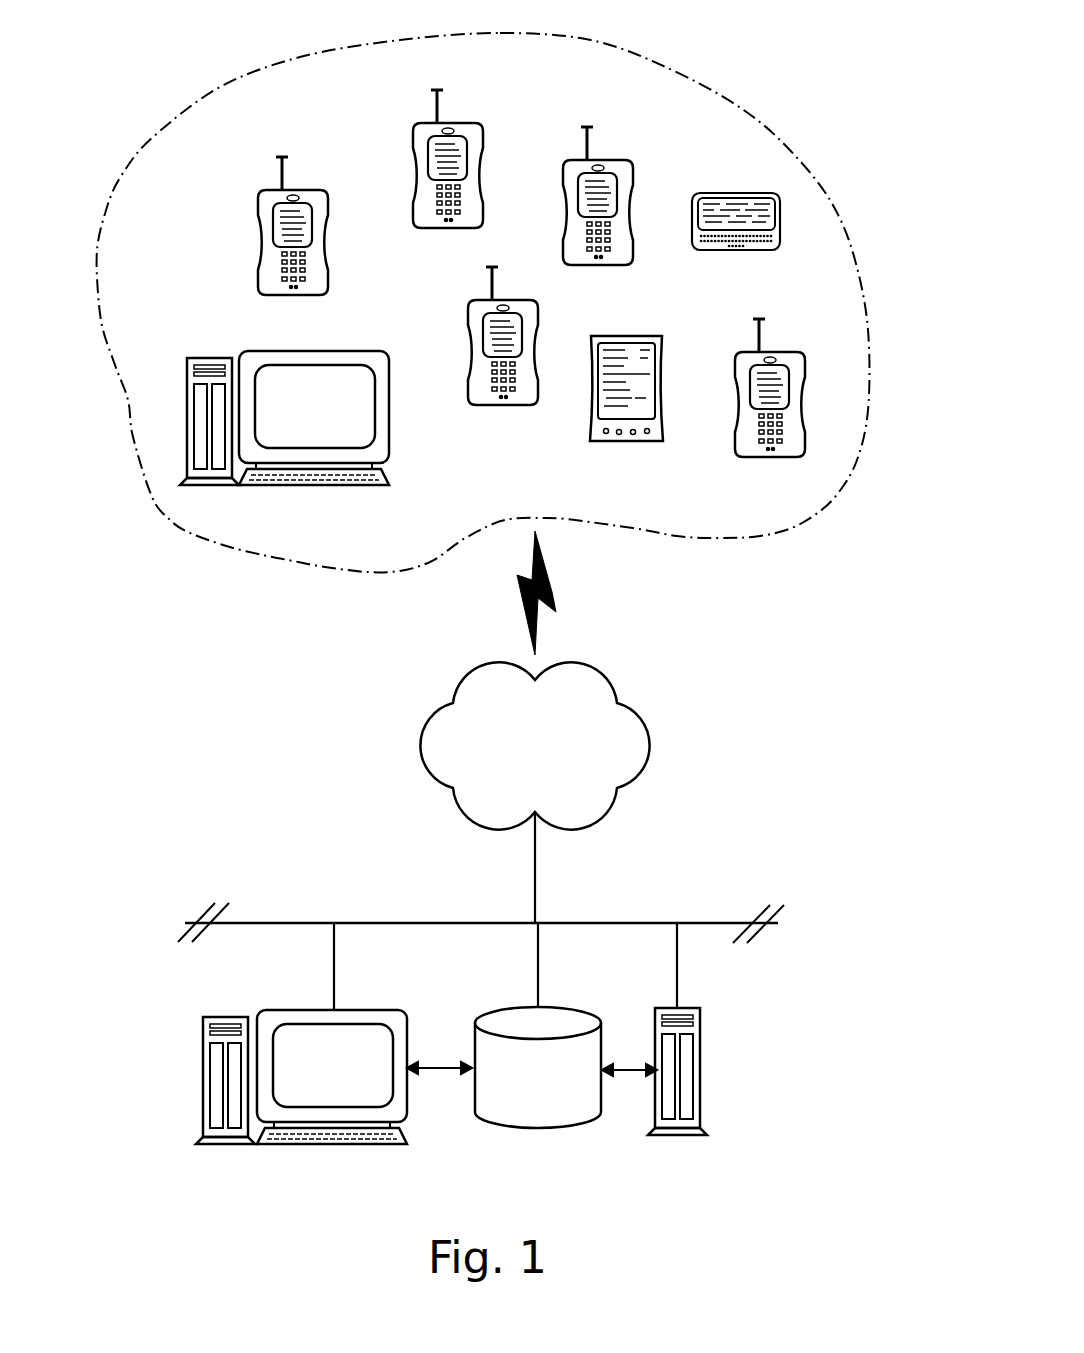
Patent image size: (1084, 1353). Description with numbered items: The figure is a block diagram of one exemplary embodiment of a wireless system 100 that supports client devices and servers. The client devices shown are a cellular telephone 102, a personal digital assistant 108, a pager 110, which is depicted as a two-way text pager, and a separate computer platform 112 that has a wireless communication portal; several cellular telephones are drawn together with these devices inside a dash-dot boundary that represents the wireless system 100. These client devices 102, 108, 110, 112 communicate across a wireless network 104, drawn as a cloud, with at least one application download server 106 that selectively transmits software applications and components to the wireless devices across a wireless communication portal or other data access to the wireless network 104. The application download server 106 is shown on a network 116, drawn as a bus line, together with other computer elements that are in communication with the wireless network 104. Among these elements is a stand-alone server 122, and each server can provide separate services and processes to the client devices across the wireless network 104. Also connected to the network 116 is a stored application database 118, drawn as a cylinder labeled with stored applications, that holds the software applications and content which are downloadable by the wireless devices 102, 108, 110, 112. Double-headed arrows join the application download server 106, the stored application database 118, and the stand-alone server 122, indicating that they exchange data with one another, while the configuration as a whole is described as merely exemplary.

The wireless system 100 is at (799, 56).
The cellular telephone 102 is at (470, 123).
The wireless network 104 is at (648, 745).
The application download server 106 is at (303, 1010).
The personal digital assistant 108 is at (590, 404).
The pager 110 is at (742, 250).
The computer platform 112 is at (312, 351).
The network 116 is at (298, 923).
The stored application database 118 is at (477, 1096).
The stand-alone server 122 is at (698, 1110).